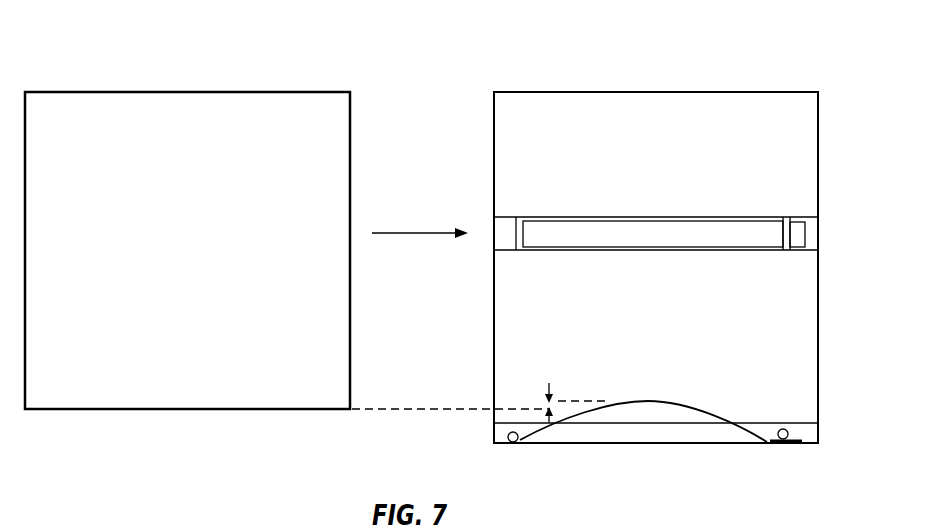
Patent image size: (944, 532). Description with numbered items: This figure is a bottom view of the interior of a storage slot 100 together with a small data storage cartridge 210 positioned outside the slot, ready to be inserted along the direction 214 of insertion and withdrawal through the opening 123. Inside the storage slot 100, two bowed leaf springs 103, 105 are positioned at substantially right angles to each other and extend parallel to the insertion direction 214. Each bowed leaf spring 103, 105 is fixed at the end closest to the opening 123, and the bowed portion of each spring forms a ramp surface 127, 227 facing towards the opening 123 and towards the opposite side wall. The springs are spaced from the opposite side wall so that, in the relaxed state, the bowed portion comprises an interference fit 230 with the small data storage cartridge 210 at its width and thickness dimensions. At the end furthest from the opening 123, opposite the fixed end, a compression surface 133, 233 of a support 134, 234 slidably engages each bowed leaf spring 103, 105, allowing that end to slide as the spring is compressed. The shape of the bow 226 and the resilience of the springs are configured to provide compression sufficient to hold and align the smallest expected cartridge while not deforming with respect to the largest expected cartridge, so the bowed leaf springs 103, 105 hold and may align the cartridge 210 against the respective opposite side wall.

The storage slot 100 is at (694, 52).
The bowed leaf spring 103 is at (699, 410).
The bowed leaf spring 105 is at (655, 218).
The opening 123 is at (494, 315).
The ramp surface 127 is at (592, 234).
The compression surface 133 is at (807, 233).
The support 134 is at (773, 216).
The small data storage cartridge 210 is at (188, 92).
The direction of insertion and withdrawal 214 is at (432, 236).
The bow 226 is at (648, 401).
The ramp surface 227 is at (596, 403).
The interference fit 230 is at (547, 398).
The compression surface 233 is at (753, 442).
The support 234 is at (723, 443).